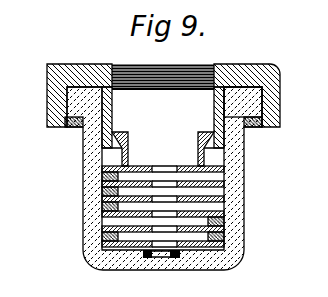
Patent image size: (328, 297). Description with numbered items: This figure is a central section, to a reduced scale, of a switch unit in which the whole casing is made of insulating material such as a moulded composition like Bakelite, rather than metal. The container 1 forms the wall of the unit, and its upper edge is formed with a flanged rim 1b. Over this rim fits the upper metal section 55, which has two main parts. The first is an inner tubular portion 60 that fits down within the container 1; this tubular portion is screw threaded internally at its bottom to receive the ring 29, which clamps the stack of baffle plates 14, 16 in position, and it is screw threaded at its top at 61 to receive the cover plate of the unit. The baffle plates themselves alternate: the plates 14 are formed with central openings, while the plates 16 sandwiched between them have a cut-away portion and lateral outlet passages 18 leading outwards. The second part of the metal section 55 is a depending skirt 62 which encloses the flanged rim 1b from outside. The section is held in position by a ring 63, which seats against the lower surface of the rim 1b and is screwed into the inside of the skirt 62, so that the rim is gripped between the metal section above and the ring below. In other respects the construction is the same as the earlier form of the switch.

The container 1 is at (85, 183).
The flanged rim 1b is at (242, 108).
The baffle plates with central openings 14 is at (226, 172).
The baffle plates with lateral outlet passages 16 is at (102, 215).
The lateral outlet passages 18 is at (216, 207).
The clamping ring 29 is at (128, 140).
The upper metal section 55 is at (238, 73).
The inner tubular portion 60 is at (220, 114).
The screw thread 61 is at (112, 67).
The depending skirt 62 is at (52, 66).
The ring 63 is at (70, 127).